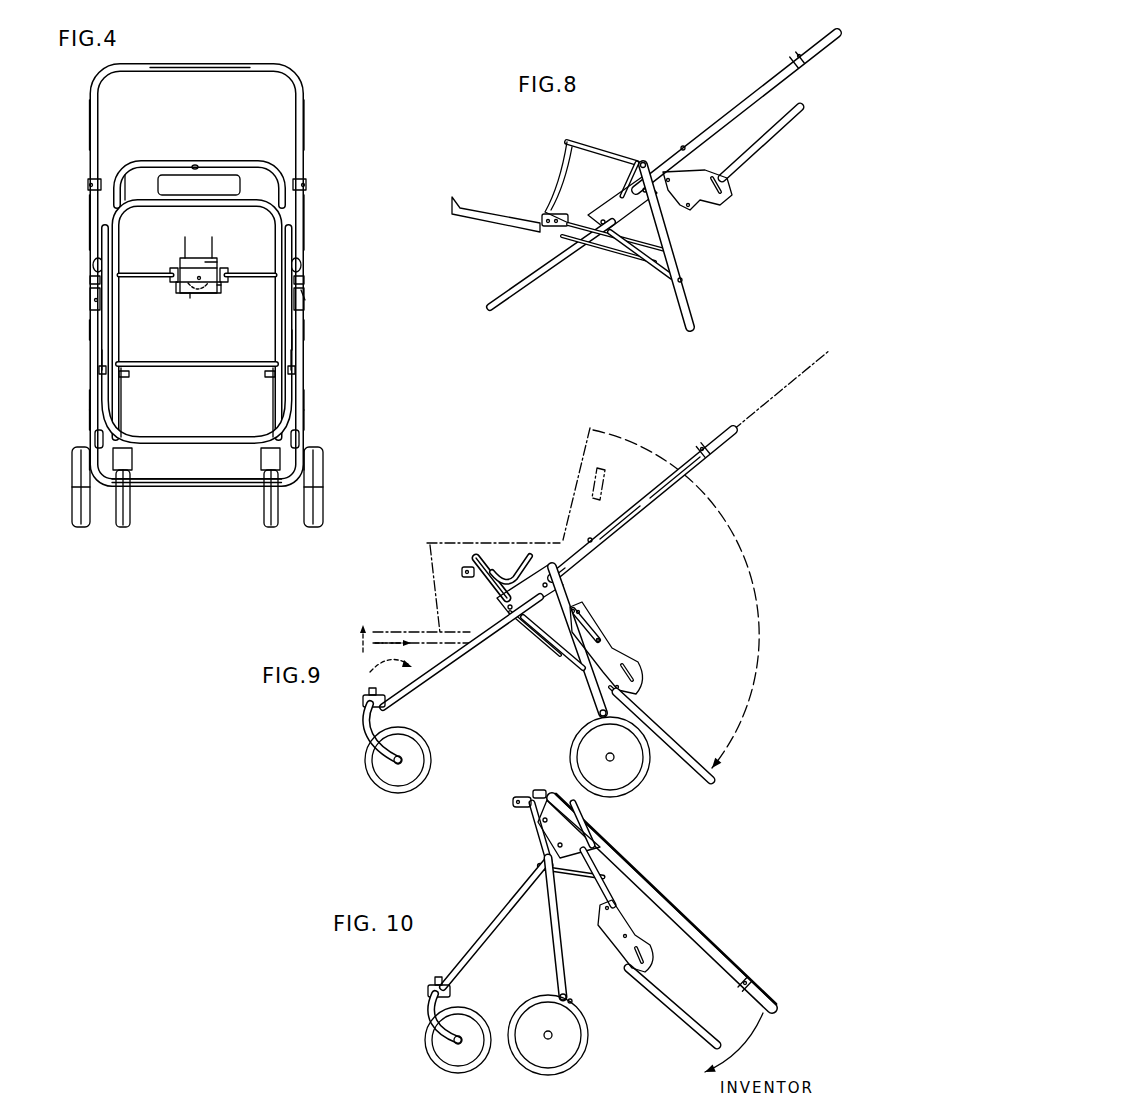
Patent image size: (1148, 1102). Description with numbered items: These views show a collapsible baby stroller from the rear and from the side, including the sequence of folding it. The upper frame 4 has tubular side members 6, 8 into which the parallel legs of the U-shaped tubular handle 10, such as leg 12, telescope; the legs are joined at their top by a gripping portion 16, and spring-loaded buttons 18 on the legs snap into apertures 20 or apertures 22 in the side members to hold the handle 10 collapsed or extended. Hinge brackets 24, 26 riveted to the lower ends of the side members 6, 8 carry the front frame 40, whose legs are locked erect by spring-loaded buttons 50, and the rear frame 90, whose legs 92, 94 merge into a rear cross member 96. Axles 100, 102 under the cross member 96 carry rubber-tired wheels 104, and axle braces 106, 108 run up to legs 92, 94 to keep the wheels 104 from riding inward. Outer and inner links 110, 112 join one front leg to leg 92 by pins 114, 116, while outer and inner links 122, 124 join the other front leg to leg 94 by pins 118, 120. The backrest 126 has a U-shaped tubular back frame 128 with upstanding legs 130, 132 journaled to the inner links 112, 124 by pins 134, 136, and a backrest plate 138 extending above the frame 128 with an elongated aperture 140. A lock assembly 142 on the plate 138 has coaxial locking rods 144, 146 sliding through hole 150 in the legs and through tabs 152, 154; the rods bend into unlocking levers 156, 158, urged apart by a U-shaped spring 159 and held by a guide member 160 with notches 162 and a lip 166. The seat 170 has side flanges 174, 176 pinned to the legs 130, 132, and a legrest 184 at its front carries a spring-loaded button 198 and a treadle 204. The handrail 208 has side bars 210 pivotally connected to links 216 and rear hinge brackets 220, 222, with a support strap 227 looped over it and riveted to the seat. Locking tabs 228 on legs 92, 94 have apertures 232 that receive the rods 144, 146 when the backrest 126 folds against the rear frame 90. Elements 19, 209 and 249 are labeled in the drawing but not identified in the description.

In FIG. 9, the upper frame 4 is at (675, 484).
In FIG. 10, the upper frame 4 is at (680, 922).
In FIG. 4, the tubular side member 6 is at (90, 211).
In FIG. 9, the tubular side member 6 is at (648, 505).
In FIG. 4, the tubular side member 8 is at (305, 208).
In FIG. 4, the U-shaped tubular handle 10 is at (303, 70).
In FIG. 9, the U-shaped tubular handle 10 is at (713, 437).
In FIG. 10, the U-shaped tubular handle 10 is at (759, 992).
In FIG. 4, the leg 12 is at (90, 112).
In FIG. 4, the gripping portion 16 is at (212, 72).
In FIG. 8, the spring-loaded button 18 is at (794, 58).
In FIG. 9, the spring-loaded button 18 is at (588, 532).
In FIG. 4, the handle side 19 is at (305, 103).
In FIG. 8, the aperture 20 is at (683, 145).
In FIG. 9, the aperture 20 is at (595, 541).
In FIG. 4, the aperture 22 is at (88, 186).
In FIG. 8, the aperture 22 is at (799, 66).
In FIG. 9, the aperture 22 is at (710, 455).
In FIG. 4, the hinge bracket 24 is at (91, 299).
In FIG. 8, the hinge bracket 24 is at (614, 208).
In FIG. 9, the hinge bracket 24 is at (566, 577).
In FIG. 10, the hinge bracket 24 is at (592, 849).
In FIG. 4, the hinge bracket 26 is at (305, 300).
In FIG. 8, the front frame 40 is at (522, 284).
In FIG. 9, the front frame 40 is at (422, 683).
In FIG. 10, the front frame 40 is at (500, 905).
In FIG. 10, the spring-loaded button 50 is at (536, 868).
In FIG. 4, the rear frame 90 is at (184, 490).
In FIG. 8, the rear frame 90 is at (692, 304).
In FIG. 9, the rear frame 90 is at (582, 701).
In FIG. 4, the leg 92 is at (90, 416).
In FIG. 4, the leg 94 is at (304, 416).
In FIG. 4, the rear cross member 96 is at (236, 492).
In FIG. 4, the axle 100 is at (118, 522).
In FIG. 4, the axle 102 is at (275, 524).
In FIG. 4, the rubber-tired wheel 104 is at (78, 526).
In FIG. 4, the axle brace 106 is at (90, 458).
In FIG. 4, the axle brace 108 is at (304, 461).
In FIG. 4, the outer link 110 is at (98, 356).
In FIG. 8, the outer link 110 is at (652, 264).
In FIG. 9, the outer link 110 is at (562, 656).
In FIG. 10, the outer link 110 is at (560, 938).
In FIG. 4, the inner link 112 is at (108, 345).
In FIG. 4, the pin 114 is at (90, 330).
In FIG. 4, the pin 116 is at (90, 396).
In FIG. 4, the pin 118 is at (304, 332).
In FIG. 4, the pin 120 is at (304, 396).
In FIG. 4, the outer link 122 is at (297, 378).
In FIG. 4, the inner link 124 is at (287, 346).
In FIG. 4, the backrest 126 is at (222, 161).
In FIG. 8, the backrest 126 is at (760, 154).
In FIG. 9, the backrest 126 is at (680, 746).
In FIG. 10, the backrest 126 is at (683, 1020).
In FIG. 4, the back frame 128 is at (283, 240).
In FIG. 4, the upstanding leg 130 is at (96, 308).
In FIG. 4, the upstanding leg 132 is at (301, 312).
In FIG. 4, the pin 134 is at (99, 370).
In FIG. 4, the pin 136 is at (292, 358).
In FIG. 4, the backrest plate 138 is at (138, 160).
In FIG. 4, the elongated aperture 140 is at (226, 181).
In FIG. 4, the lock assembly 142 is at (176, 256).
In FIG. 4, the locking rod 144 is at (150, 280).
In FIG. 8, the locking rod 144 is at (716, 176).
In FIG. 9, the locking rod 144 is at (622, 704).
In FIG. 10, the locking rod 144 is at (626, 970).
In FIG. 4, the locking rod 146 is at (249, 280).
In FIG. 4, the hole 150 is at (304, 283).
In FIG. 4, the tab 152 is at (170, 273).
In FIG. 4, the tab 154 is at (230, 273).
In FIG. 4, the unlocking lever 156 is at (185, 237).
In FIG. 4, the unlocking lever 158 is at (214, 240).
In FIG. 4, the U-shaped spring 159 is at (200, 290).
In FIG. 4, the guide member 160 is at (208, 250).
In FIG. 4, the notch 162 is at (190, 295).
In FIG. 4, the lip 166 is at (221, 290).
In FIG. 4, the seat 170 is at (205, 369).
In FIG. 8, the seat 170 is at (598, 243).
In FIG. 9, the seat 170 is at (492, 585).
In FIG. 10, the seat 170 is at (530, 830).
In FIG. 4, the side flange 174 is at (129, 377).
In FIG. 4, the side flange 176 is at (265, 377).
In FIG. 8, the legrest 184 is at (488, 222).
In FIG. 4, the spring-loaded button 198 is at (90, 280).
In FIG. 9, the treadle 204 is at (493, 555).
In FIG. 8, the handrail 208 is at (597, 142).
In FIG. 10, the handrail 208 is at (588, 828).
In FIG. 10, the tab 209 is at (545, 794).
In FIG. 9, the side bar 210 is at (590, 617).
In FIG. 8, the link 216 is at (636, 166).
In FIG. 9, the link 216 is at (542, 626).
In FIG. 10, the link 216 is at (560, 880).
In FIG. 4, the hinge bracket 220 is at (94, 263).
In FIG. 8, the hinge bracket 220 is at (725, 200).
In FIG. 9, the hinge bracket 220 is at (627, 657).
In FIG. 10, the hinge bracket 220 is at (642, 946).
In FIG. 4, the hinge bracket 222 is at (301, 263).
In FIG. 9, the support strap 227 is at (520, 566).
In FIG. 4, the locking tab 228 is at (95, 439).
In FIG. 9, the locking tab 228 is at (598, 716).
In FIG. 10, the locking tab 228 is at (568, 993).
In FIG. 10, the aperture 232 is at (573, 1001).
In FIG. 4, the hole 249 is at (196, 164).